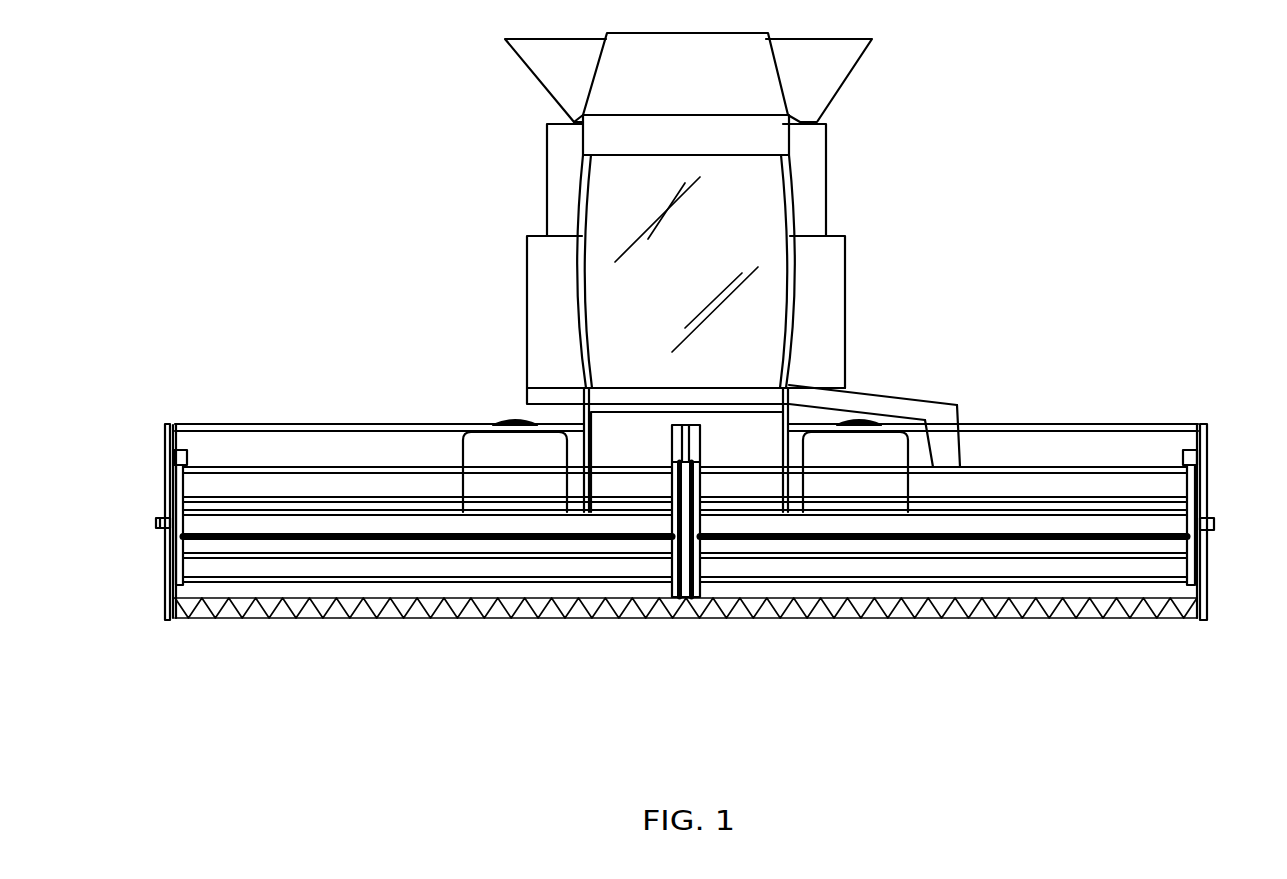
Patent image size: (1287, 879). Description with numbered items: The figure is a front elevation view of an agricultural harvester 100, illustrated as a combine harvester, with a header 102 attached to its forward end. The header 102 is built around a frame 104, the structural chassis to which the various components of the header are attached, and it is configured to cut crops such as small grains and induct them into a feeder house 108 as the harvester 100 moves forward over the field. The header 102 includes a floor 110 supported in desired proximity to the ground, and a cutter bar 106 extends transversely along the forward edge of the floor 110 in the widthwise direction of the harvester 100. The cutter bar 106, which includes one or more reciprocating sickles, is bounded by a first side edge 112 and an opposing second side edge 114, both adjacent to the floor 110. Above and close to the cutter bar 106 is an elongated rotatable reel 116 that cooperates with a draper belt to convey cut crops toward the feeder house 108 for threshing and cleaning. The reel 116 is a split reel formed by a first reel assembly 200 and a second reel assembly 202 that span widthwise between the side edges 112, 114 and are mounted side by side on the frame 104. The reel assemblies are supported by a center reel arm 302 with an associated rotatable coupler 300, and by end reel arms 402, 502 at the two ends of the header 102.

The agricultural harvester 100 is at (679, 272).
The header 102 is at (666, 487).
The frame 104 is at (317, 423).
The cutter bar 106 is at (683, 700).
The feeder house 108 is at (742, 433).
The floor 110 is at (350, 620).
The first side edge 112 is at (152, 498).
The second side edge 114 is at (1210, 507).
The rotatable reel 116 is at (1007, 535).
The first reel assembly 200 is at (680, 622).
The second reel assembly 202 is at (1195, 622).
The rotatable coupler 300 is at (790, 457).
The reel arm 302 is at (687, 425).
The end reel arm 402 is at (186, 449).
The end reel arm 502 is at (1195, 449).